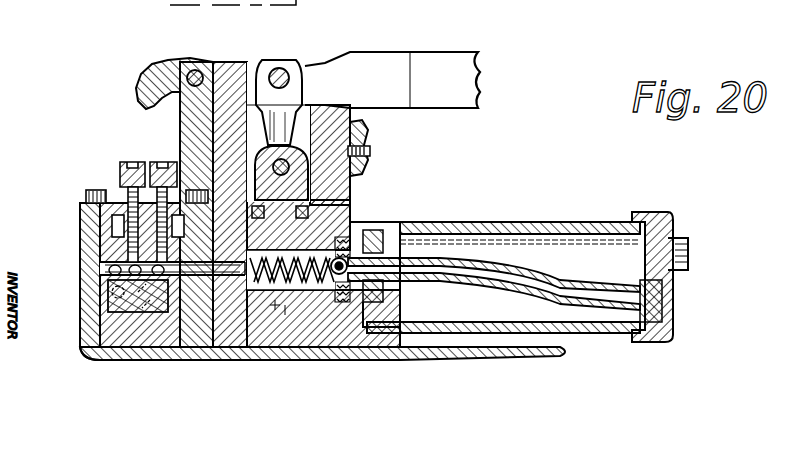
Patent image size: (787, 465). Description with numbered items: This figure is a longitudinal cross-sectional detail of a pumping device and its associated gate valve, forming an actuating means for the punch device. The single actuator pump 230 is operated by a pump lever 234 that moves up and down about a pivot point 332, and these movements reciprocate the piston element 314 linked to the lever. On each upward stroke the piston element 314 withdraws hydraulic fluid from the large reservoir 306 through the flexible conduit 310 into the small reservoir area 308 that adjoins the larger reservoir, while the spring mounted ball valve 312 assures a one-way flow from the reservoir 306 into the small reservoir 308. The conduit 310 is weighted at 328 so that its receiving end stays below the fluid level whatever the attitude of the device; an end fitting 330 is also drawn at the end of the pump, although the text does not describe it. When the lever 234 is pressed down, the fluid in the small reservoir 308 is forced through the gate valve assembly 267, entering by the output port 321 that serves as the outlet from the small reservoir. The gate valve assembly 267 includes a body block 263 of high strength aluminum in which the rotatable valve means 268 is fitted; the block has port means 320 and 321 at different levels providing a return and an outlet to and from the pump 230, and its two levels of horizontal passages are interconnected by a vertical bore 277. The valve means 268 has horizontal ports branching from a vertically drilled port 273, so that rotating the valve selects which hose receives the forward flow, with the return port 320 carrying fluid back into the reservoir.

The pivot point 332 is at (200, 82).
The pump lever 234 is at (462, 86).
The piston element 314 is at (350, 182).
The actuator pump 230 is at (498, 222).
The spring mounted ball valve 312 is at (302, 177).
The conduit 310 is at (525, 284).
The reservoir 306 is at (600, 279).
The weight 328 is at (640, 280).
The end nut 330 is at (690, 256).
The small reservoir area 308 is at (348, 300).
The gate valve assembly 267 is at (77, 242).
The vertically drilled port 273 is at (110, 268).
The output port 321 is at (108, 283).
The vertical bore 277 is at (66, 318).
The valve means 268 is at (118, 300).
The body block 263 is at (102, 356).
The return port 320 is at (283, 355).